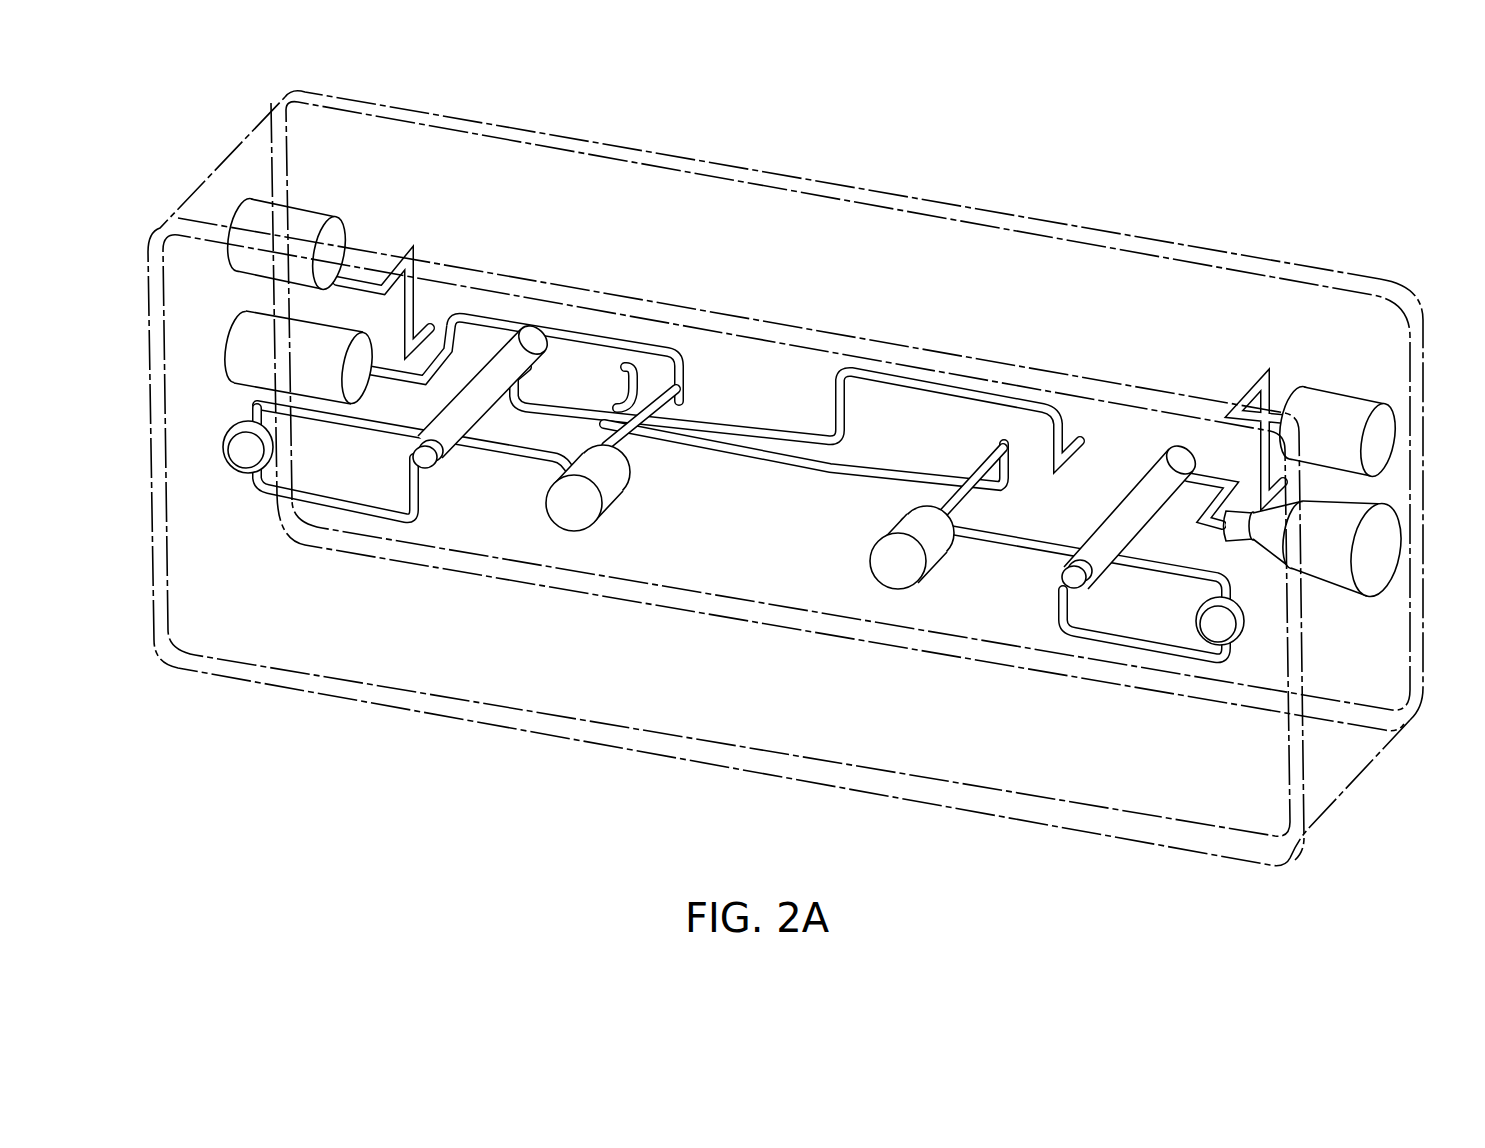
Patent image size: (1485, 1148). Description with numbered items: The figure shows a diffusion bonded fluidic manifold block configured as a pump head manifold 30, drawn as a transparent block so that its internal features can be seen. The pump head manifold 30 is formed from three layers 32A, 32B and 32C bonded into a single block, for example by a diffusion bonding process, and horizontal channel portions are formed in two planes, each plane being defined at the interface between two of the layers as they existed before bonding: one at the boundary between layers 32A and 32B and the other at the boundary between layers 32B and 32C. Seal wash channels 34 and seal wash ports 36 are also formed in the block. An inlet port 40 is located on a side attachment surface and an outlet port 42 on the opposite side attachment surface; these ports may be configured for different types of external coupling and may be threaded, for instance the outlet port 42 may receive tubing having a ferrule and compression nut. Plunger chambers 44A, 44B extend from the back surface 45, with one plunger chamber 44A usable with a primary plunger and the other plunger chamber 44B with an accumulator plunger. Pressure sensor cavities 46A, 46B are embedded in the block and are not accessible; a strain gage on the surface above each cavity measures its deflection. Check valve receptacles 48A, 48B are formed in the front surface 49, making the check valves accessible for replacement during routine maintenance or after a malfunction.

The pump head manifold 30 is at (1266, 218).
The first layer 32A is at (182, 228).
The second layer 32B is at (247, 158).
The third layer 32C is at (298, 93).
The seal wash channel 34 is at (414, 241).
The seal wash port 36 is at (312, 217).
The inlet port 40 is at (237, 348).
The outlet port 42 is at (1324, 568).
The plunger chamber 44A is at (443, 418).
The plunger chamber 44B is at (1107, 524).
The back surface 45 is at (1436, 599).
The pressure sensor cavity 46A is at (233, 464).
The pressure sensor cavity 46B is at (1200, 621).
The check valve receptacle 48A is at (610, 497).
The check valve receptacle 48B is at (933, 557).
The front surface 49 is at (1225, 838).